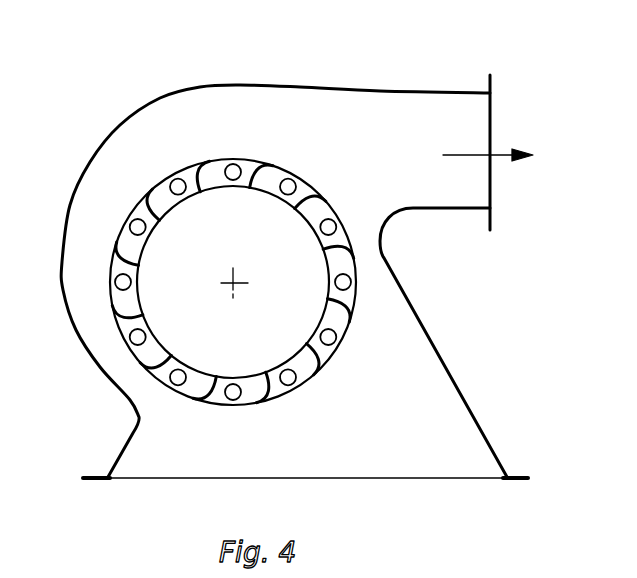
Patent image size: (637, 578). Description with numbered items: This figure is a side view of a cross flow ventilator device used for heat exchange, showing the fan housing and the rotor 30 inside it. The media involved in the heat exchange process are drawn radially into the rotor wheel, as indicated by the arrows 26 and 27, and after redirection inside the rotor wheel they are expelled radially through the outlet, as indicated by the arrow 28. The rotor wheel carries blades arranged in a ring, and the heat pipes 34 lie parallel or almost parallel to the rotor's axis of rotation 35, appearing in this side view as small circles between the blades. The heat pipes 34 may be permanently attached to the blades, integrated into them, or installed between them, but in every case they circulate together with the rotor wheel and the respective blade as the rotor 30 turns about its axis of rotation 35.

The inlet flow arrow 26 is at (197, 428).
The inlet flow arrow 27 is at (322, 410).
The outlet flow arrow 28 is at (504, 156).
The rotor 30 is at (230, 278).
The heat pipes 34 is at (288, 178).
The axis of rotation 35 is at (252, 168).